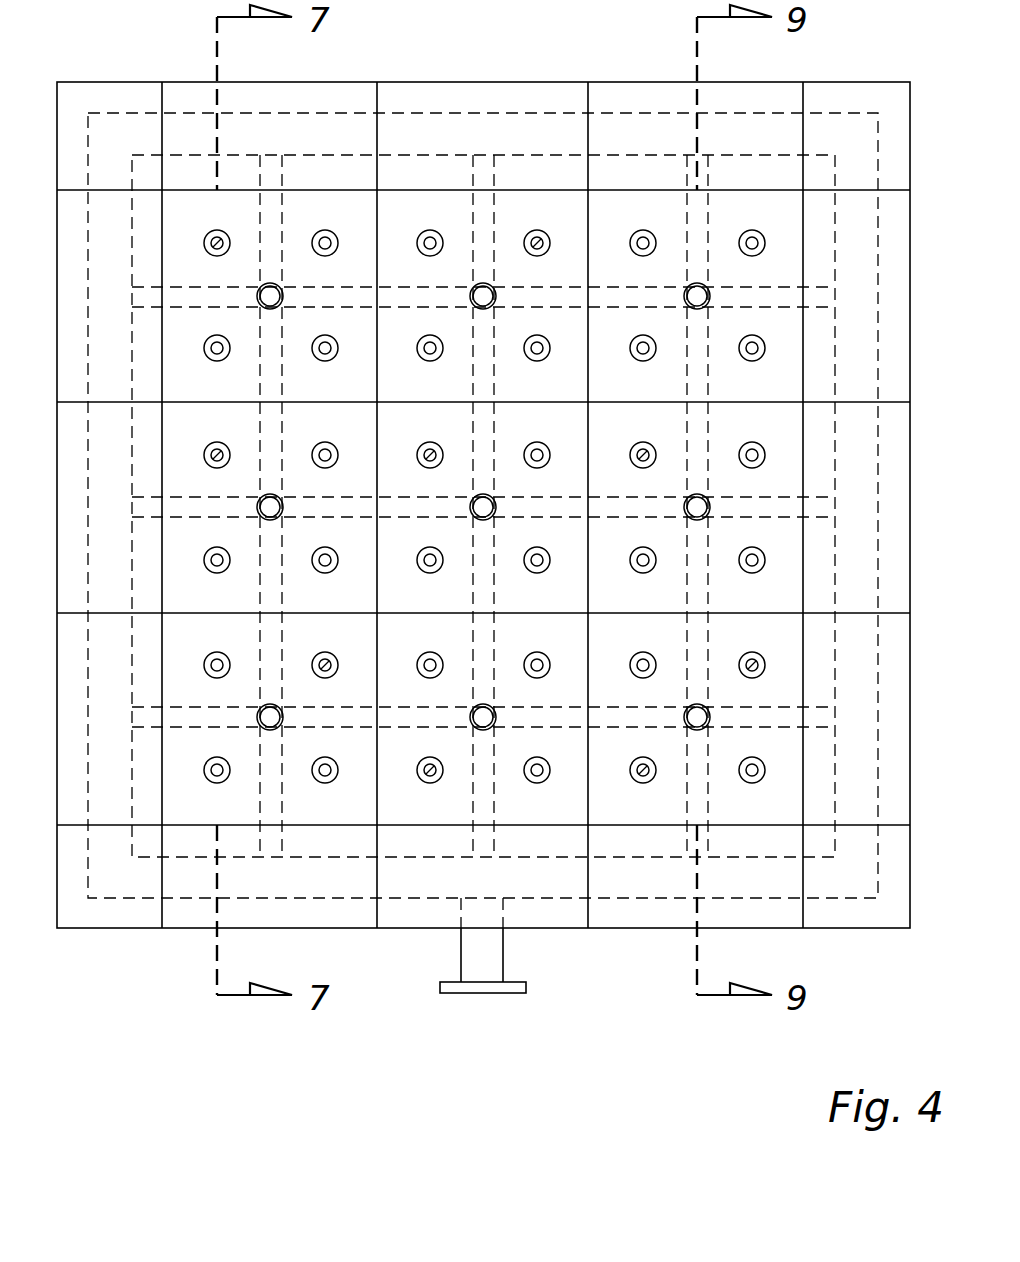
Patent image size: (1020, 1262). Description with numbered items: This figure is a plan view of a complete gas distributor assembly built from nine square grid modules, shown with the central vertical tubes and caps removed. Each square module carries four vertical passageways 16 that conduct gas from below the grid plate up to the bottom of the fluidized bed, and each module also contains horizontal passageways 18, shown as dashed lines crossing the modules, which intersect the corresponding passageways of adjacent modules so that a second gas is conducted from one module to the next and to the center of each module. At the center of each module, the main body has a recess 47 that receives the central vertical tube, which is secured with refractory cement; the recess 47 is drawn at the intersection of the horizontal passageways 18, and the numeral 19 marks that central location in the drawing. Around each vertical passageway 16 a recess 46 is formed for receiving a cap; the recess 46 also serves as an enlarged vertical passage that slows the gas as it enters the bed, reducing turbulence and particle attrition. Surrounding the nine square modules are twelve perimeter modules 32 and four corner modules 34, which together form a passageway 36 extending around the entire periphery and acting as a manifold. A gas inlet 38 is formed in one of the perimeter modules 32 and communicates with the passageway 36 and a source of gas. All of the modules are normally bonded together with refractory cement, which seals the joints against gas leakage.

The vertical passageway 16 is at (632, 773).
The horizontal passageway 18 is at (417, 727).
The central opening 19 is at (496, 689).
The perimeter module 32 is at (550, 956).
The corner module 34 is at (888, 955).
The passageway 36 is at (162, 667).
The gas inlet 38 is at (488, 993).
The recess 46 is at (642, 777).
The recess 47 is at (523, 741).